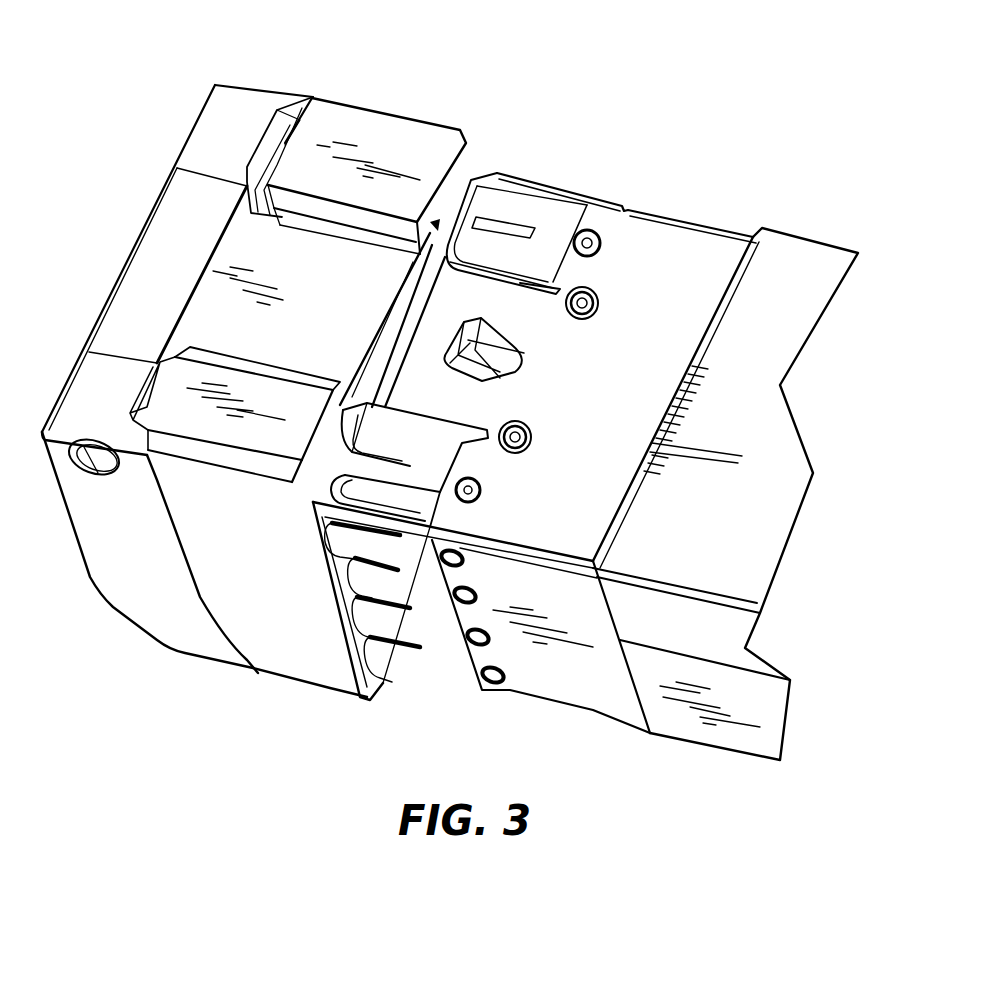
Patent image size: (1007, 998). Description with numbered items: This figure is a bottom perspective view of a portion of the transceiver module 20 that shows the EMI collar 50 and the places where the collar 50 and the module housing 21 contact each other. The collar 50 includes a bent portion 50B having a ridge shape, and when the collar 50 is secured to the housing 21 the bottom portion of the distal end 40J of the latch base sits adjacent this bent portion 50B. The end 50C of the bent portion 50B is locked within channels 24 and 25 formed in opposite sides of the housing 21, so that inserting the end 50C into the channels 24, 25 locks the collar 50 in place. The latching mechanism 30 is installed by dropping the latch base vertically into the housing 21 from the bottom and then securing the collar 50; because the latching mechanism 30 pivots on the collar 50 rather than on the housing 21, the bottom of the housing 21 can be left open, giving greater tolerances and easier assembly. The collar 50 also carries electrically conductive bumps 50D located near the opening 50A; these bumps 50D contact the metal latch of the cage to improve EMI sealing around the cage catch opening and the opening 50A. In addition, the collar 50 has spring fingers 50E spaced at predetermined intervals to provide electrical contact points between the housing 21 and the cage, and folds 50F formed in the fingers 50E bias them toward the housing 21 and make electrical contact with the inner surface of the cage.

The transceiver module 20 is at (762, 96).
The module housing 21 is at (778, 272).
The channel 24 is at (358, 400).
The channel 25 is at (502, 242).
The latching mechanism 30 is at (143, 596).
The distal end of the latch base 40J is at (333, 306).
The EMI collar 50 is at (653, 245).
The opening 50A is at (477, 380).
The bent portion 50B is at (332, 303).
The end of the bent portion 50C is at (363, 307).
The electrically conductive bumps 50D is at (596, 301).
The spring fingers 50E is at (340, 490).
The folds 50F is at (363, 443).